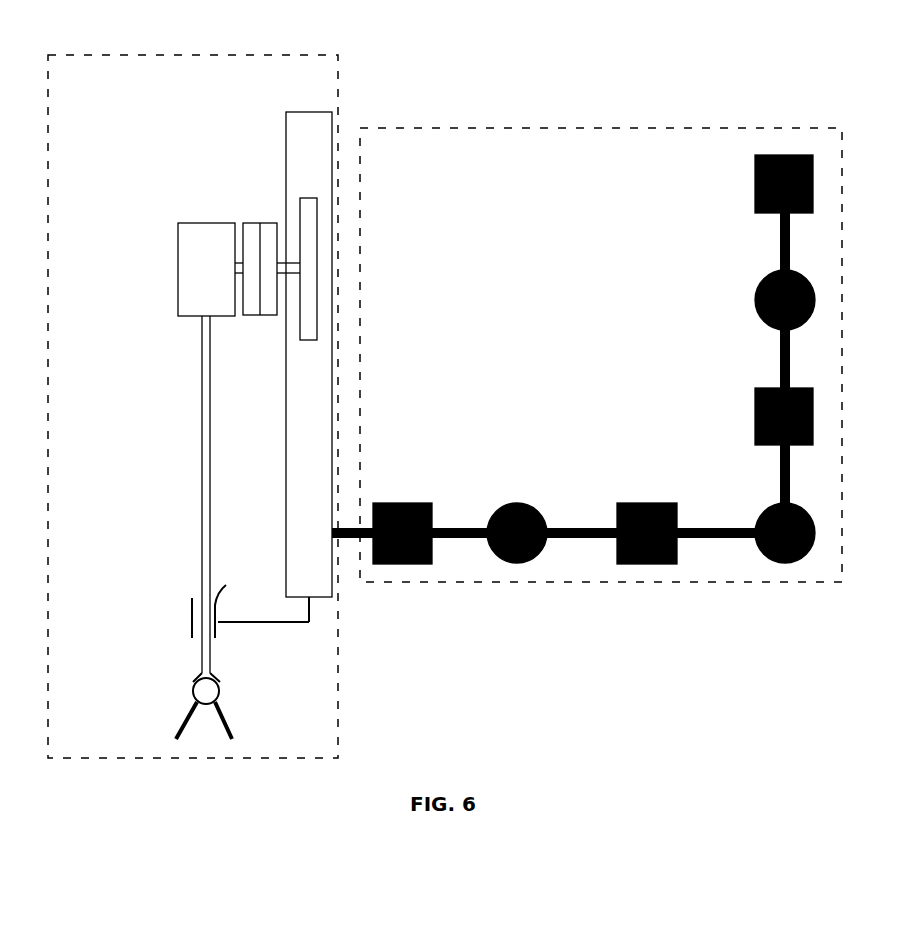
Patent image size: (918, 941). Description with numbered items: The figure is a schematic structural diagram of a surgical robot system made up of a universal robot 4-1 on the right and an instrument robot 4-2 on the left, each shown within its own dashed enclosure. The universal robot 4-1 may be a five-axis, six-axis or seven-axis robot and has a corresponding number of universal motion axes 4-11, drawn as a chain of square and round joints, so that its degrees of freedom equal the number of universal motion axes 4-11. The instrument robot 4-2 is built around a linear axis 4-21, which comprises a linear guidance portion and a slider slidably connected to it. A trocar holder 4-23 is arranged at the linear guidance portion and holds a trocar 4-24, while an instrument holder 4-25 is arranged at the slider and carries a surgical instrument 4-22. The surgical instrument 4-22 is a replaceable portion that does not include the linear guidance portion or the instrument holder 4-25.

The universal robot 4-1 is at (388, 130).
The universal motion axis 4-11 is at (757, 400).
The instrument robot 4-2 is at (322, 56).
The linear axis 4-21 is at (318, 125).
The surgical instrument 4-22 is at (201, 410).
The trocar holder 4-23 is at (233, 627).
The trocar 4-24 is at (189, 597).
The instrument holder 4-25 is at (192, 221).